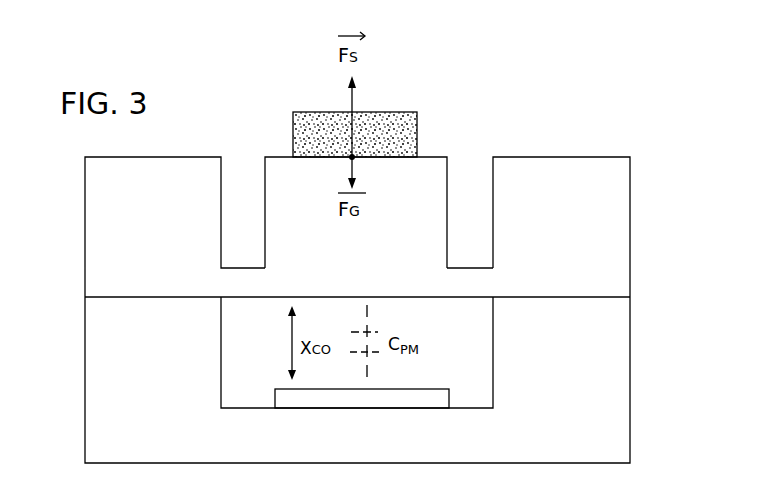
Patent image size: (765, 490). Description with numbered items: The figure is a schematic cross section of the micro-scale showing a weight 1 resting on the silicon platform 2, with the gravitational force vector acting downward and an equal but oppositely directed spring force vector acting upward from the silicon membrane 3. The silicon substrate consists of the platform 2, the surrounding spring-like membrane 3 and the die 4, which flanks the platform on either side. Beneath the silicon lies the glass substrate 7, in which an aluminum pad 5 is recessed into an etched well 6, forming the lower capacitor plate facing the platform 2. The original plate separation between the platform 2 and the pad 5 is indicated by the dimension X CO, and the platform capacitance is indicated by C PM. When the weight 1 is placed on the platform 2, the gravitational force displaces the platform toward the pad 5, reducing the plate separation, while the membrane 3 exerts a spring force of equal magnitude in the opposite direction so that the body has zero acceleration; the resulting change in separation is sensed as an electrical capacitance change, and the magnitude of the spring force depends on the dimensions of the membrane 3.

The weight 1 is at (393, 130).
The silicon platform 2 is at (430, 180).
The silicon membrane 3 is at (467, 285).
The die 4 is at (580, 190).
The aluminum pad 5 is at (432, 398).
The etched well 6 is at (478, 335).
The glass substrate 7 is at (600, 338).